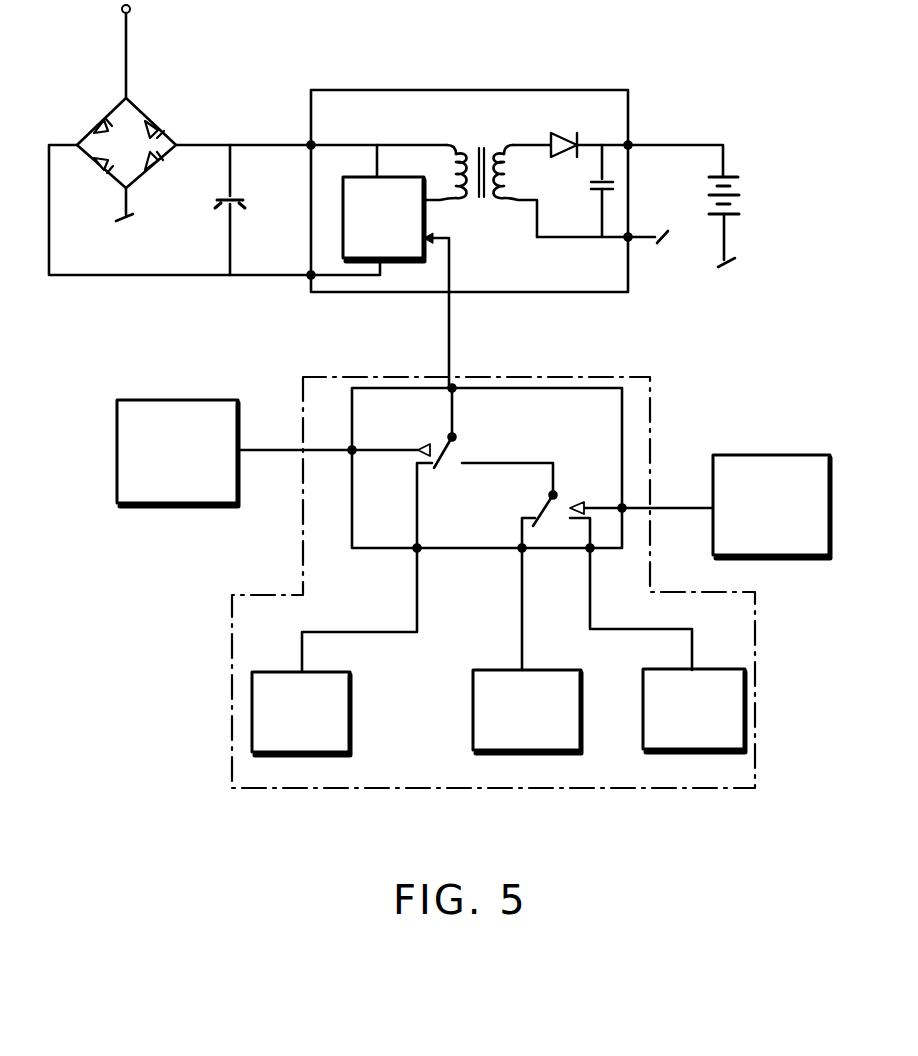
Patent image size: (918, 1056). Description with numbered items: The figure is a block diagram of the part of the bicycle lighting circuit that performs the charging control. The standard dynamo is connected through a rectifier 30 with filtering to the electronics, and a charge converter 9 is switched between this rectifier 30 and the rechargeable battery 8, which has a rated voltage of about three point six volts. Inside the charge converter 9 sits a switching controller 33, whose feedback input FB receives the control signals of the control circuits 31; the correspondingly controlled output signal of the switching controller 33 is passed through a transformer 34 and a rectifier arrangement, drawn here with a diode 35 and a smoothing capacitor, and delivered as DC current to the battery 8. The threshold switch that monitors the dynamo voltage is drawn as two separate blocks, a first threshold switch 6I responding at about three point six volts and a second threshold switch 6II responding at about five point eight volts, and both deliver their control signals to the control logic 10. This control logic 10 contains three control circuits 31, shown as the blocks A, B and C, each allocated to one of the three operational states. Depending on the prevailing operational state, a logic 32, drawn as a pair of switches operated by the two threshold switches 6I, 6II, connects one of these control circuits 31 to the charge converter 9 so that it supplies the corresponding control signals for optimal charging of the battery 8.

The rectifier 30 is at (173, 100).
The charge converter 9 is at (355, 72).
The switching controller 33 is at (386, 298).
The transformer 34 is at (480, 143).
The rectifier diode 35 is at (573, 143).
The rechargeable battery 8 is at (742, 206).
The control logic 10 is at (540, 375).
The first threshold switch 6I is at (174, 400).
The second threshold switch 6II is at (773, 455).
The logic 32 is at (392, 549).
The control circuits 31 is at (352, 705).